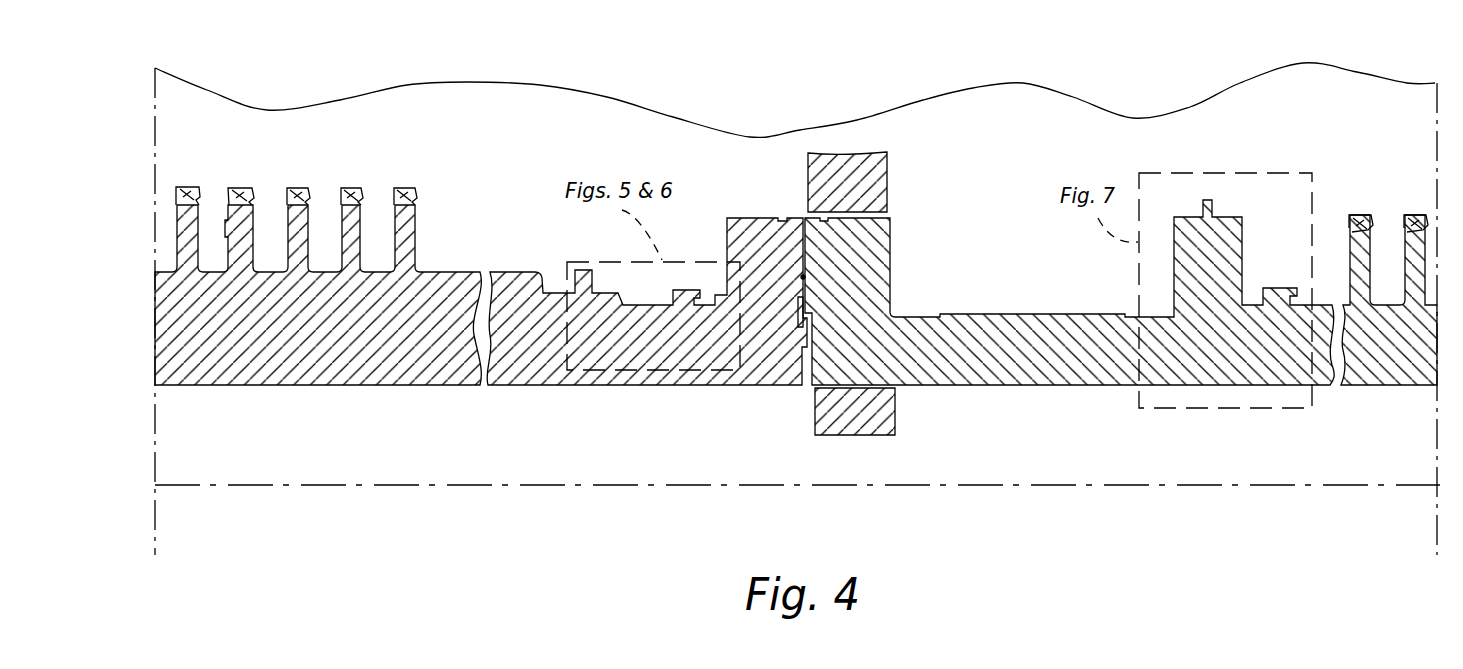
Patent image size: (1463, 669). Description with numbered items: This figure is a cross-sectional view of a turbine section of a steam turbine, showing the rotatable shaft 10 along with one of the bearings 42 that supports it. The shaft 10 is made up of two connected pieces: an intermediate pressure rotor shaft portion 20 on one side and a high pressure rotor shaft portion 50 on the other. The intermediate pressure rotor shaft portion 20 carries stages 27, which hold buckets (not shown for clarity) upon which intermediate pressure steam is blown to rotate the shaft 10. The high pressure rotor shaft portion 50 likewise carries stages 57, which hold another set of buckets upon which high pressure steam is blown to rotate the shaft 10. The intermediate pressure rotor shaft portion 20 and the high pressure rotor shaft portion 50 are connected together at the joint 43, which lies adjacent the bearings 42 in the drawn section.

The rotatable shaft 10 is at (703, 407).
The intermediate pressure (IP) rotor shaft portion 20 is at (308, 327).
The stages 27 is at (408, 230).
The bearings 42 is at (863, 182).
The joint 43 is at (802, 300).
The high pressure (HP) rotor shaft portion 50 is at (1260, 353).
The stages 57 is at (1408, 250).